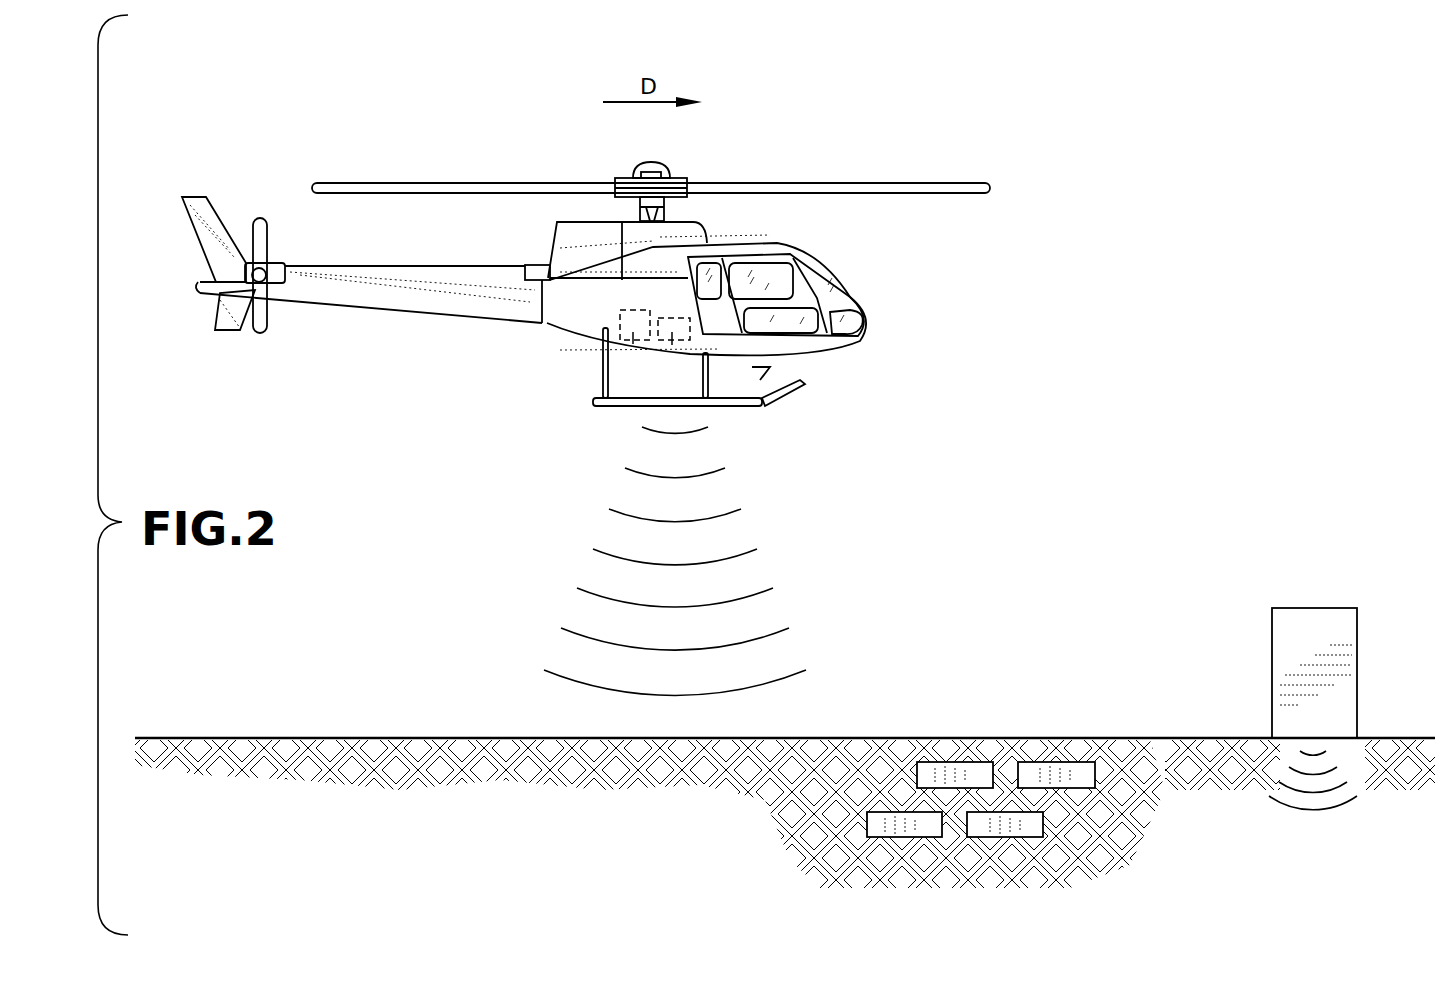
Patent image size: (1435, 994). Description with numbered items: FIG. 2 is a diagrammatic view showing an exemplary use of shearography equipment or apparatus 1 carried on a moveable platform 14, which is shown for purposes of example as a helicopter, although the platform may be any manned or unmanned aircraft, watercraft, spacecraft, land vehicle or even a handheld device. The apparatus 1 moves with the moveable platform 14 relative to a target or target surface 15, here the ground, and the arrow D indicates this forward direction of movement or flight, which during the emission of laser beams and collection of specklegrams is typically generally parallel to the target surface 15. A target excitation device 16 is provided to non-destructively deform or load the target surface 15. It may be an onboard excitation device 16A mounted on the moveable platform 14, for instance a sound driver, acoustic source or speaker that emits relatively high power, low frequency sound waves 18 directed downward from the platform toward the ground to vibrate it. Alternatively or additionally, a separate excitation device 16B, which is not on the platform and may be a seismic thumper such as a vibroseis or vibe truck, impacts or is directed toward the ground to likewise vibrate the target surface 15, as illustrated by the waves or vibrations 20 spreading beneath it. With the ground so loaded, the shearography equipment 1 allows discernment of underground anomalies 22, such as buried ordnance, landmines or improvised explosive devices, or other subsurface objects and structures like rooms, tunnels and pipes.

The shearography apparatus 1 is at (633, 340).
The moveable platform 14 is at (838, 270).
The target surface 15 is at (373, 738).
The target excitation device 16 is at (910, 528).
The onboard excitation device 16A is at (670, 345).
The separate excitation device 16B is at (1272, 650).
The sound waves 18 is at (563, 677).
The waves or vibrations 20 is at (1333, 810).
The underground anomalies 22 is at (970, 765).